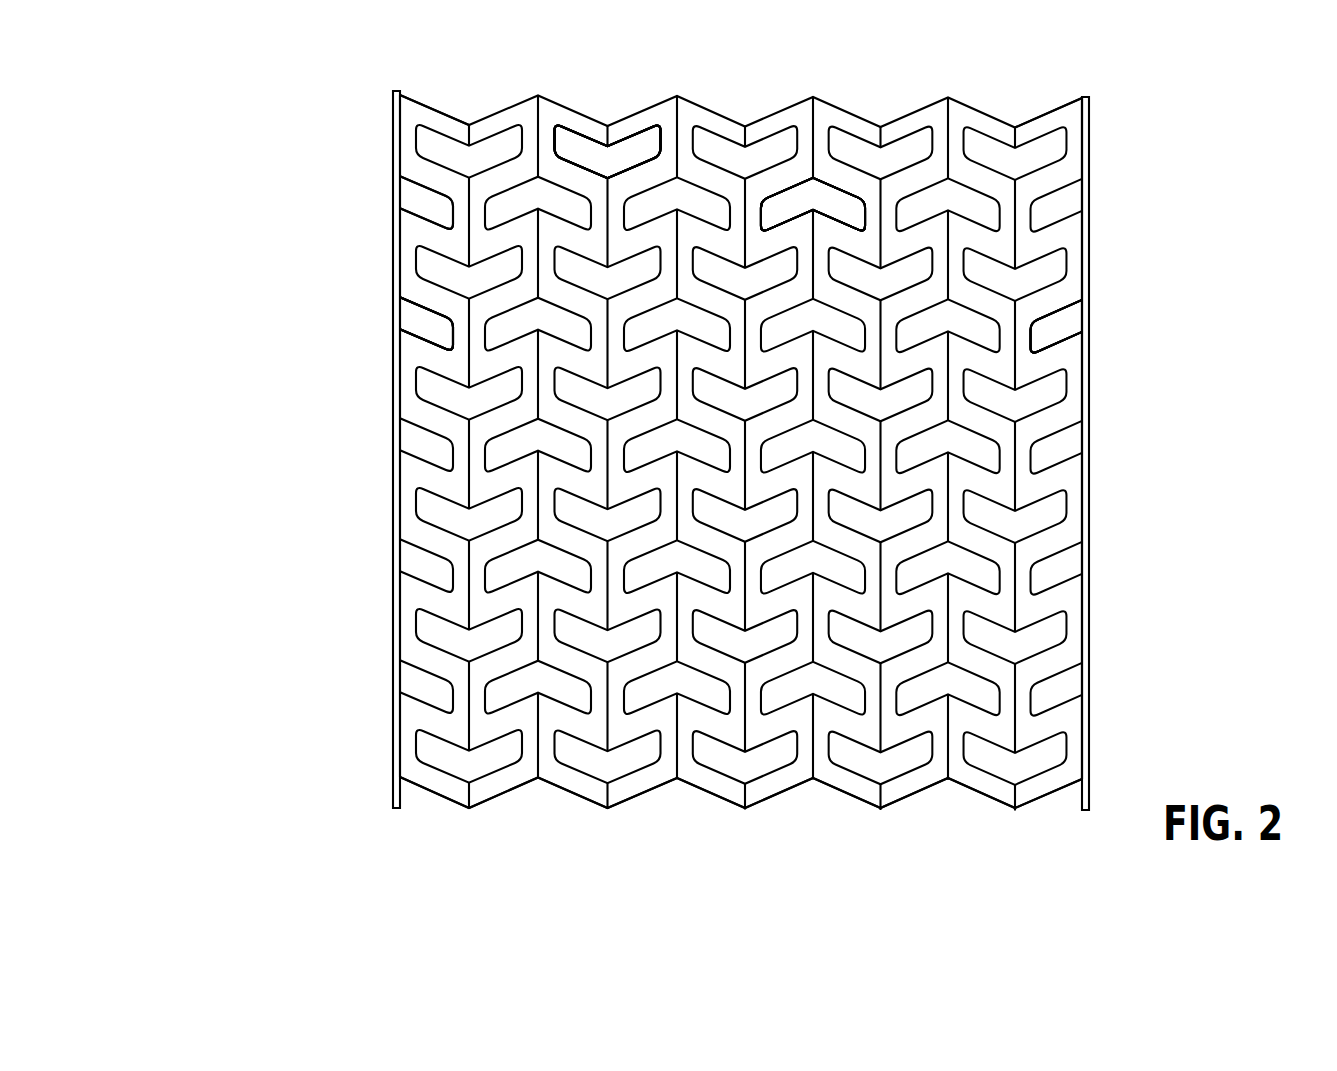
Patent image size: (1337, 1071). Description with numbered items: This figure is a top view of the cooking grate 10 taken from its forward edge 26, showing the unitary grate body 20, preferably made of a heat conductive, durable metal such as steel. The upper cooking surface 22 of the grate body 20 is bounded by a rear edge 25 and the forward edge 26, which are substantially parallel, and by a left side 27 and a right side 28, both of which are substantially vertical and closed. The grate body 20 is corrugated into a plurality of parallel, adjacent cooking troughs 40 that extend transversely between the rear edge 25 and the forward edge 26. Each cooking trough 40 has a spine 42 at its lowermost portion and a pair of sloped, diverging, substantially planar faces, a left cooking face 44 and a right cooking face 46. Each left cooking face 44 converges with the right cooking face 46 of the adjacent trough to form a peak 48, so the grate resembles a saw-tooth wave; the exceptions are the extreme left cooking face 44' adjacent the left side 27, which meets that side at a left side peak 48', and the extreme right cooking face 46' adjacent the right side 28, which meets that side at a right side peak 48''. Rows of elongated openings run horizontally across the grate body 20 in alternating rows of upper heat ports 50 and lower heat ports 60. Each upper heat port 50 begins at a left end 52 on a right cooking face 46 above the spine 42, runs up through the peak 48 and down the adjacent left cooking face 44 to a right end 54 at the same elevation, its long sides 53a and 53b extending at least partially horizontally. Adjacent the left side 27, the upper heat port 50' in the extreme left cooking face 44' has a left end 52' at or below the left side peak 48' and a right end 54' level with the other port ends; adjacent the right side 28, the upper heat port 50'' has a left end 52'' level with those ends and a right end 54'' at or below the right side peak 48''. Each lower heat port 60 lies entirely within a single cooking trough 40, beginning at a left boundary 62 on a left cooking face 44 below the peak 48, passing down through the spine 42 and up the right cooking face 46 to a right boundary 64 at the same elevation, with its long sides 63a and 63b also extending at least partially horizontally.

The cooking grate 10 is at (279, 167).
The grate body 20 is at (1093, 470).
The upper cooking surface 22 is at (418, 112).
The rear edge 25 is at (1048, 112).
The forward edge 26 is at (1038, 803).
The left side 27 is at (392, 465).
The right side 28 is at (1092, 411).
The cooking trough 40 is at (469, 82).
The spine 42 is at (467, 808).
The left cooking face 44 is at (776, 813).
The right cooking face 46 is at (708, 813).
The extreme right cooking face 46' is at (1102, 455).
The extreme left cooking face 44' is at (393, 451).
The peak 48 is at (727, 406).
The left side peak 48' is at (395, 144).
The right side peak 48'' is at (1131, 438).
The upper heat port 50 is at (813, 147).
The left end 52 is at (810, 143).
The right end 54 is at (822, 152).
The long side 53a is at (828, 183).
The long side 53b is at (778, 228).
The upper heat port 50' is at (394, 298).
The left end 52' is at (392, 319).
The right end 54' is at (392, 333).
The upper heat port 50'' is at (1093, 303).
The left end 52'' is at (1095, 331).
The right end 54'' is at (1096, 322).
The lower heat port 60 is at (582, 143).
The left boundary 62 is at (553, 133).
The long side 63a is at (641, 133).
The long side 63b is at (638, 170).
The right boundary 64 is at (657, 135).